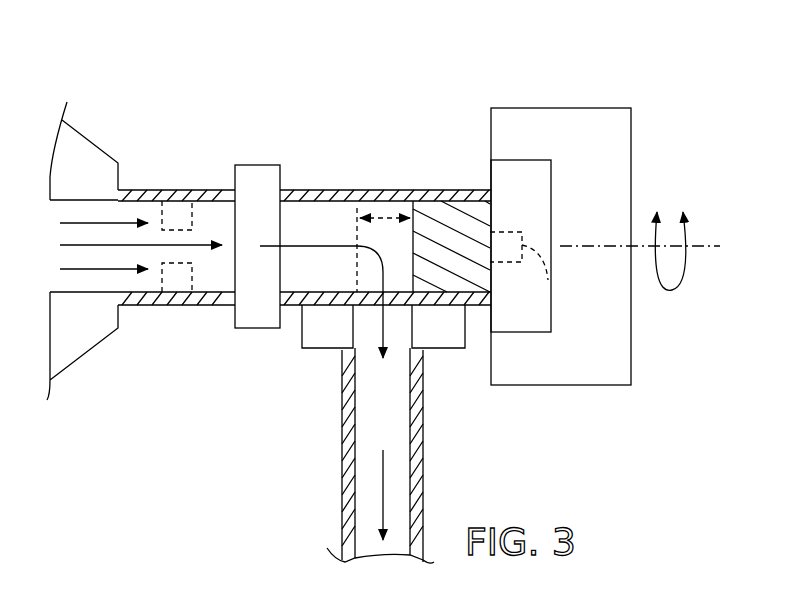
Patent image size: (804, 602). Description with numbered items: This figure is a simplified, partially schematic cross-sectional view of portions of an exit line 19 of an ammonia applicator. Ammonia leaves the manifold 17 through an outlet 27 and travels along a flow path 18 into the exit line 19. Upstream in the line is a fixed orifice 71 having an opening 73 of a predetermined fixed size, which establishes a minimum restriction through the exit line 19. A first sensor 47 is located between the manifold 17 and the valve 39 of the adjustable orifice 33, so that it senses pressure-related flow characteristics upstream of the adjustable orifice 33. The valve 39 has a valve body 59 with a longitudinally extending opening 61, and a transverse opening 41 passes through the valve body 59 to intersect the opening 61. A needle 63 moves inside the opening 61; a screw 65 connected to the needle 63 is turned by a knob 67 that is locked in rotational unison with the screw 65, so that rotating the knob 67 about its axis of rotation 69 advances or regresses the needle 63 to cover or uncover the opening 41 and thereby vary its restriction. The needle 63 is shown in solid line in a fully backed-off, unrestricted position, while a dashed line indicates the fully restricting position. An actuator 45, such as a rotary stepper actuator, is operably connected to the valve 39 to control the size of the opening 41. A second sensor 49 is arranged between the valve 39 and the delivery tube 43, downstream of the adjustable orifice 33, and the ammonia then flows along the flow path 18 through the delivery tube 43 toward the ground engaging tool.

The exit line 19 is at (457, 58).
The manifold 17 is at (62, 162).
The outlet 27 is at (117, 282).
The valve 39 is at (296, 184).
The fixed orifice 71 is at (178, 212).
The opening 73 is at (180, 265).
The first sensor 47 is at (256, 165).
The longitudinally extending opening 61 is at (318, 228).
The valve body 59 is at (392, 188).
The adjustable orifice 33 is at (430, 163).
The needle 63 is at (465, 225).
The screw 65 is at (557, 290).
The knob 67 is at (522, 160).
The axis of rotation 69 is at (595, 246).
The actuator 45 is at (632, 355).
The second sensor 49 is at (310, 340).
The opening 41 is at (370, 292).
The delivery tube 43 is at (425, 478).
The flow path 18 is at (380, 492).